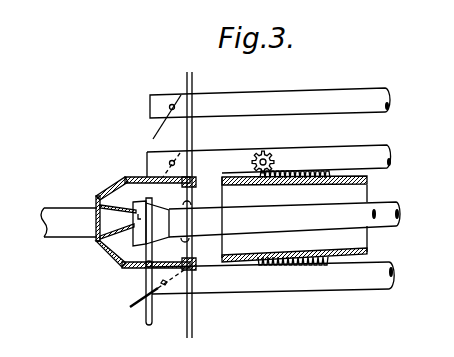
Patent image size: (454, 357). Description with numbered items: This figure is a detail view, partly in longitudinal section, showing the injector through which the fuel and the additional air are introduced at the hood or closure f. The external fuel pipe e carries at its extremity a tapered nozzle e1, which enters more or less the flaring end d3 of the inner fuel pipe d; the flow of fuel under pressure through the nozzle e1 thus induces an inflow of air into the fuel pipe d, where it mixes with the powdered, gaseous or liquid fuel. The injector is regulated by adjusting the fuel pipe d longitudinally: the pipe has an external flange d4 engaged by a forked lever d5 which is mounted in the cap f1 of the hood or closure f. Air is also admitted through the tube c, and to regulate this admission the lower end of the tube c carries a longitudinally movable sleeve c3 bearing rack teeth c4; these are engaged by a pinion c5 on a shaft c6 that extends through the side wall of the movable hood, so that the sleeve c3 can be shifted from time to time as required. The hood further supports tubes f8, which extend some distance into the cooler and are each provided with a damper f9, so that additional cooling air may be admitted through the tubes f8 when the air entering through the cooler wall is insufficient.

The tube c is at (368, 190).
The longitudinally movable sleeve c3 is at (257, 267).
The rack teeth c4 is at (312, 172).
The pinion c5 is at (274, 170).
The shaft c6 is at (266, 152).
The inner fuel pipe d is at (347, 220).
The flaring end d3 is at (137, 202).
The external flange d4 is at (124, 237).
The forked lever d5 is at (146, 247).
The external fuel pipe e is at (55, 211).
The nozzle e1 is at (112, 252).
The hood or closure f is at (187, 77).
The cap f1 is at (118, 263).
The tubes f8 is at (354, 160).
The damper f9 is at (160, 325).